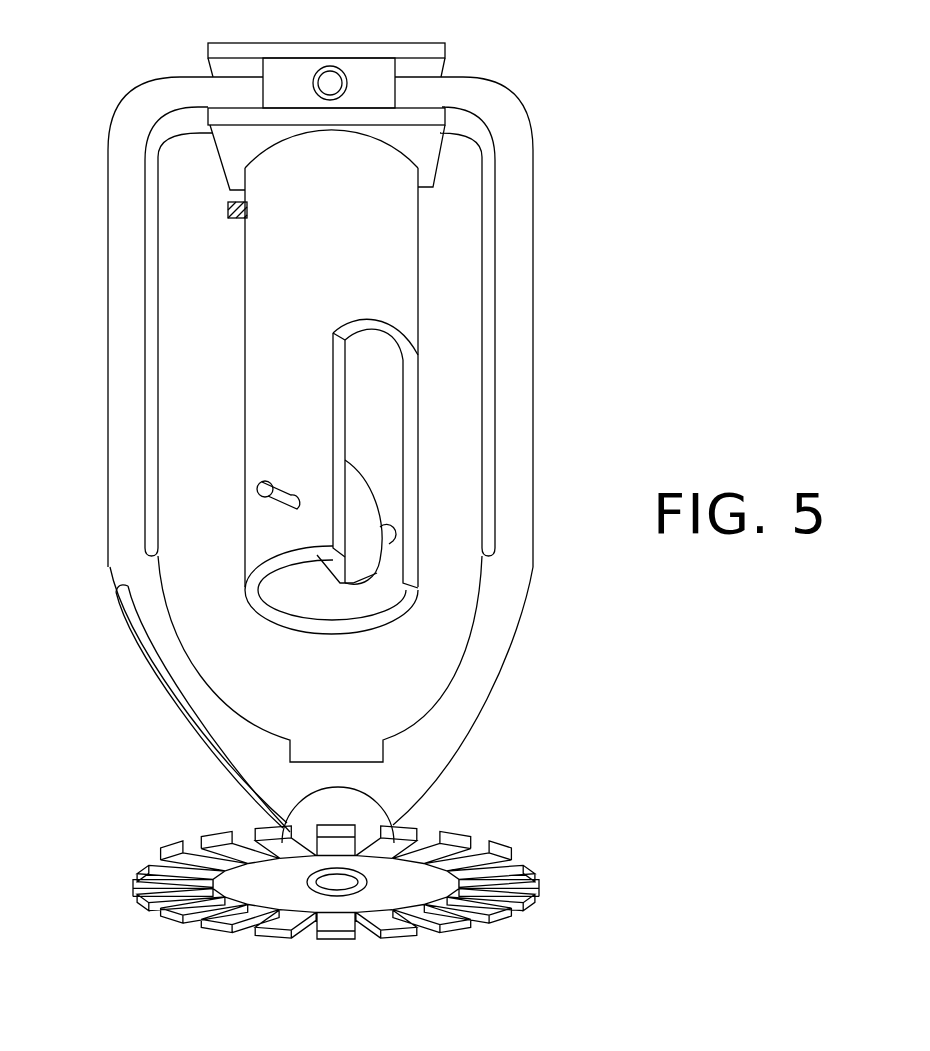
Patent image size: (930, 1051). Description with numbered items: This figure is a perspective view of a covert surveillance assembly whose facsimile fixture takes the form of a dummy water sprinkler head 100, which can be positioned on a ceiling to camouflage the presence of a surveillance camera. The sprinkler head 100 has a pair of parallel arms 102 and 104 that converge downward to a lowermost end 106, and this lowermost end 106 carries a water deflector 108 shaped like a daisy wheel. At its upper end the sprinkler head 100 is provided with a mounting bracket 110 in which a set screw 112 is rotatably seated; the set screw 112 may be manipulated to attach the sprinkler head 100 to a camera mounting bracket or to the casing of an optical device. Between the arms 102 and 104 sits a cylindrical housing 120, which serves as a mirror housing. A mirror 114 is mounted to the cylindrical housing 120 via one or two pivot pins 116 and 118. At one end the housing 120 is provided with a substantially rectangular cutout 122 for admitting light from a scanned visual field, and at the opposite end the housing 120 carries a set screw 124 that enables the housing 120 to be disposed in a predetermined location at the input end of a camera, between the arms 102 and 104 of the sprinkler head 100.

The dummy water sprinkler head 100 is at (552, 371).
The arm 102 is at (113, 343).
The arm 104 is at (522, 273).
The lowermost end 106 is at (367, 803).
The water deflector 108 is at (512, 847).
The mounting bracket 110 is at (377, 68).
The set screw 112 is at (330, 66).
The mirror 114 is at (363, 498).
The pivot pin 116 is at (263, 490).
The pivot pin 118 is at (387, 537).
The cylindrical housing 120 is at (253, 335).
The rectangular cutout 122 is at (413, 388).
The set screw 124 is at (233, 218).